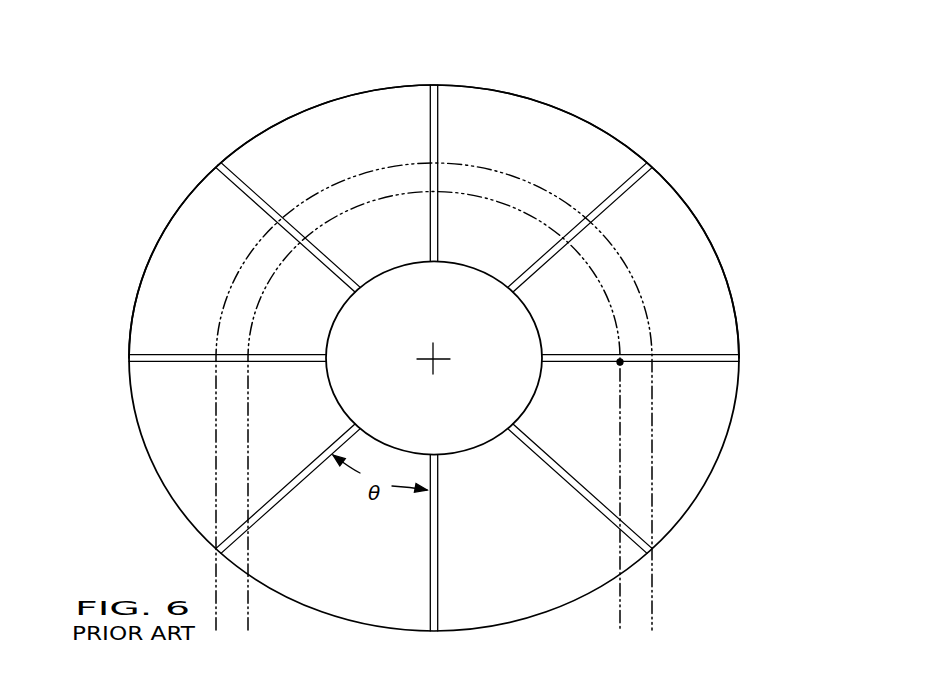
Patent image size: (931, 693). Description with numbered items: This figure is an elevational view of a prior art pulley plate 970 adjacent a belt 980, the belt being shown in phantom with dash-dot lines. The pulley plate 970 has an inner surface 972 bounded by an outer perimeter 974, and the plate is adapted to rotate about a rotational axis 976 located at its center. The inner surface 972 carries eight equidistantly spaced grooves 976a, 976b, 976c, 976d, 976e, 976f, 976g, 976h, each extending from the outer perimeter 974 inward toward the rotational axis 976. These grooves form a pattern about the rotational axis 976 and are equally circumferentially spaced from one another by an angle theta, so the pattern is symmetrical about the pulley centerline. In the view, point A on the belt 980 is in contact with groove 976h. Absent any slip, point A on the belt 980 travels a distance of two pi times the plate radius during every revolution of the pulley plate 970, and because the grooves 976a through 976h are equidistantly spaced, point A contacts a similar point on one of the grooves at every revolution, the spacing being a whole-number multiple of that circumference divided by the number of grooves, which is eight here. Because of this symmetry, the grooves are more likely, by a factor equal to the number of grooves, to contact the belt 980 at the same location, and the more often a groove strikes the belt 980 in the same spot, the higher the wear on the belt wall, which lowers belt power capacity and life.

The pulley plate 970 is at (102, 253).
The inner surface 972 is at (538, 128).
The outer perimeter 974 is at (607, 132).
The rotational axis 976 is at (433, 361).
The groove 976a is at (550, 473).
The groove 976b is at (440, 595).
The groove 976c is at (263, 518).
The groove 976d is at (170, 363).
The groove 976e is at (253, 185).
The groove 976f is at (440, 128).
The groove 976g is at (633, 188).
The groove 976h is at (708, 353).
The belt 980 is at (653, 477).
The point on belt A is at (620, 362).